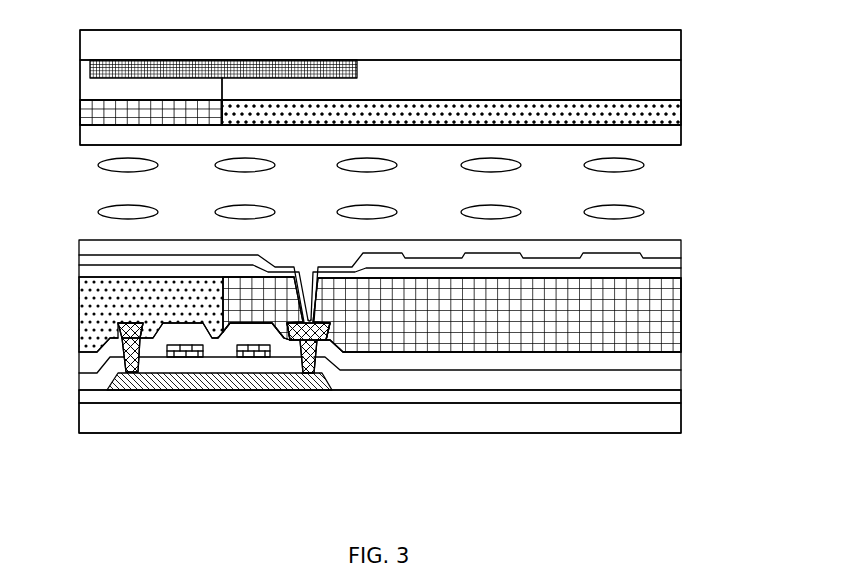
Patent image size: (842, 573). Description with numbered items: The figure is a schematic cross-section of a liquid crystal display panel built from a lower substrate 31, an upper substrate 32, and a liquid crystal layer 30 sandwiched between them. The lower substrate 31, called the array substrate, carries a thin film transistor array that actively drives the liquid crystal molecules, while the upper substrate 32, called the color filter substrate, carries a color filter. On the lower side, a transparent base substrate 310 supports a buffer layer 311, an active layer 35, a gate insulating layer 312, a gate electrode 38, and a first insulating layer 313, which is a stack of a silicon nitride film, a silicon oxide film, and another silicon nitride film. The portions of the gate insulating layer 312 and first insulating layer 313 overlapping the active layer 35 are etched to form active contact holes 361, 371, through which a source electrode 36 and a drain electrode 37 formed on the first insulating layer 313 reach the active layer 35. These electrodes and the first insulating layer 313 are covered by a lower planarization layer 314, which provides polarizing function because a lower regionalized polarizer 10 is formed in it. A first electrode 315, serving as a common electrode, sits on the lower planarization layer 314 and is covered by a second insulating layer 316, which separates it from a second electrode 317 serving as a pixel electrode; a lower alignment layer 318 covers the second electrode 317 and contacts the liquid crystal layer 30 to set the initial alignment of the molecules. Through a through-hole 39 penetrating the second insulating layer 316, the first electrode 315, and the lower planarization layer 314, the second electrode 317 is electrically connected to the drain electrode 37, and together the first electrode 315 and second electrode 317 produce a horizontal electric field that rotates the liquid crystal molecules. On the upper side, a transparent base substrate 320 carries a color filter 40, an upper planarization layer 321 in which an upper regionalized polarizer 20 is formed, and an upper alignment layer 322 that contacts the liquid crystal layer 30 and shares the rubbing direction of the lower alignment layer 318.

The upper substrate 32 is at (425, 73).
The transparent base substrate 320 is at (671, 47).
The color filter 40 is at (665, 90).
The upper planarization layer 321 is at (671, 118).
The upper regionalized polarizer 20 is at (456, 101).
The upper alignment layer 322 is at (668, 142).
The liquid crystal layer 30 is at (108, 187).
The lower substrate 31 is at (422, 328).
The transparent base substrate 310 is at (670, 426).
The buffer layer 311 is at (663, 400).
The gate insulating layer 312 is at (662, 387).
The first insulating layer 313 is at (648, 367).
The lower planarization layer 314 is at (660, 318).
The lower regionalized polarizer 10 is at (525, 310).
The first electrode 315 is at (650, 278).
The second insulating layer 316 is at (647, 268).
The second electrode 317 is at (625, 257).
The lower alignment layer 318 is at (565, 255).
The active layer 35 is at (165, 380).
The gate electrode 38 is at (192, 362).
The source electrode 36 is at (140, 372).
The active contact hole 361 is at (152, 411).
The drain electrode 37 is at (318, 355).
The active contact hole 371 is at (395, 412).
The through-hole 39 is at (313, 302).